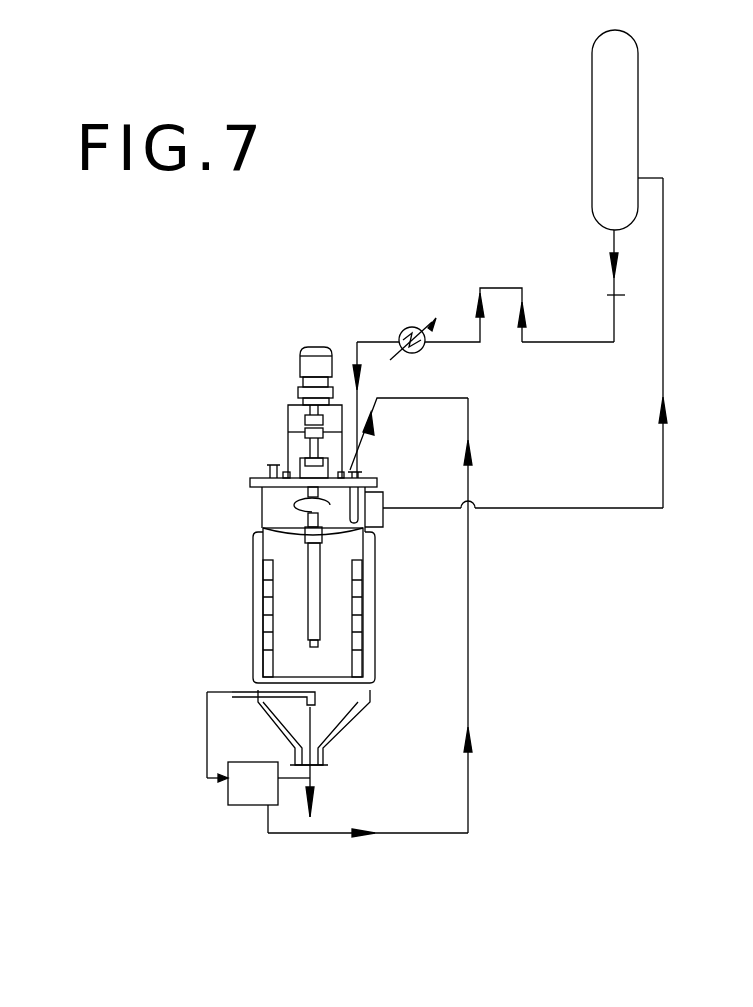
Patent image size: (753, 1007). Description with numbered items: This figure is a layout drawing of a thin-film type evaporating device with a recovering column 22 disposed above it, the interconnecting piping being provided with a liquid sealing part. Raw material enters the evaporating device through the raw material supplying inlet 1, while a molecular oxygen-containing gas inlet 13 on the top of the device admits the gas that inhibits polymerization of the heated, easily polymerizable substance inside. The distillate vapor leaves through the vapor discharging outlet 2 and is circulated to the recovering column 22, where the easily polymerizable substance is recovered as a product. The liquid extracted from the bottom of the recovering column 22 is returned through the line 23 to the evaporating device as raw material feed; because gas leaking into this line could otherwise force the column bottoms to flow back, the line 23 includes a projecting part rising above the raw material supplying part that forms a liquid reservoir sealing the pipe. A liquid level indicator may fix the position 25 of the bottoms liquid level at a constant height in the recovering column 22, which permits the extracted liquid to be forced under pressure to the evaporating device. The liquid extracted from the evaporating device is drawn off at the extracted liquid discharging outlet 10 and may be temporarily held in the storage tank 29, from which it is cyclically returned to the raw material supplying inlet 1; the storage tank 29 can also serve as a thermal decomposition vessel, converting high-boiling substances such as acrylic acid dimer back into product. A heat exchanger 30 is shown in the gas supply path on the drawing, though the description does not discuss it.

The raw material supplying inlet 1 is at (355, 470).
The vapor discharging outlet 2 is at (385, 525).
The extracted liquid discharging outlet 10 is at (328, 762).
The molecular oxygen-containing gas inlet 13 is at (272, 462).
The recovering column 22 is at (624, 130).
The line 23 is at (500, 288).
The liquid level position 25 is at (611, 295).
The storage tank 29 is at (252, 805).
The heat exchanger 30 is at (413, 352).